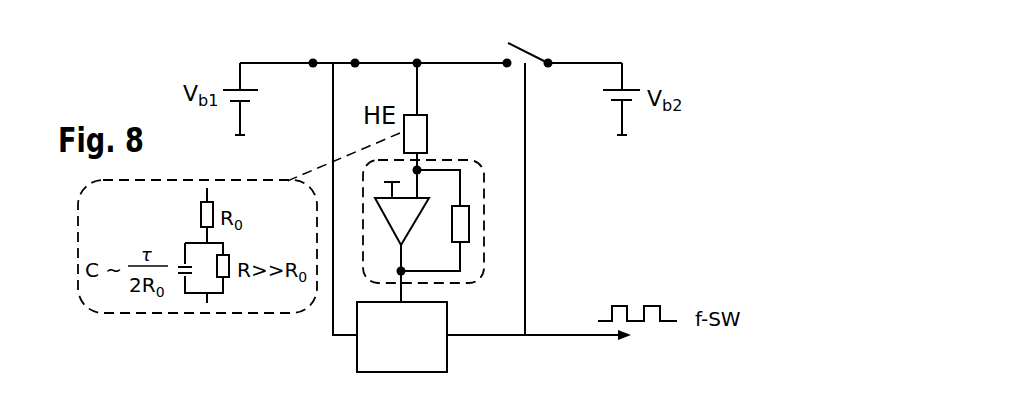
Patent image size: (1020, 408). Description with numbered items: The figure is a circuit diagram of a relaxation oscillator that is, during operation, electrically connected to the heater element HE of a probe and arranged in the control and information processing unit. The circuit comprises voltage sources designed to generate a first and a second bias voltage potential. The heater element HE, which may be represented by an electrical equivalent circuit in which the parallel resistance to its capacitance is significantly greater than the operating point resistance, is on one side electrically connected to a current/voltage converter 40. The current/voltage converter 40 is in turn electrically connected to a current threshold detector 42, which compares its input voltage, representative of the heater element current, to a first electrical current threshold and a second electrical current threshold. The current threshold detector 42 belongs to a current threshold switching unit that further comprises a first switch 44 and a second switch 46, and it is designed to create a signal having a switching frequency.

The current/voltage converter 40 is at (477, 203).
The current threshold detector 42 is at (448, 343).
The first switch 44 is at (340, 62).
The second switch 46 is at (528, 50).